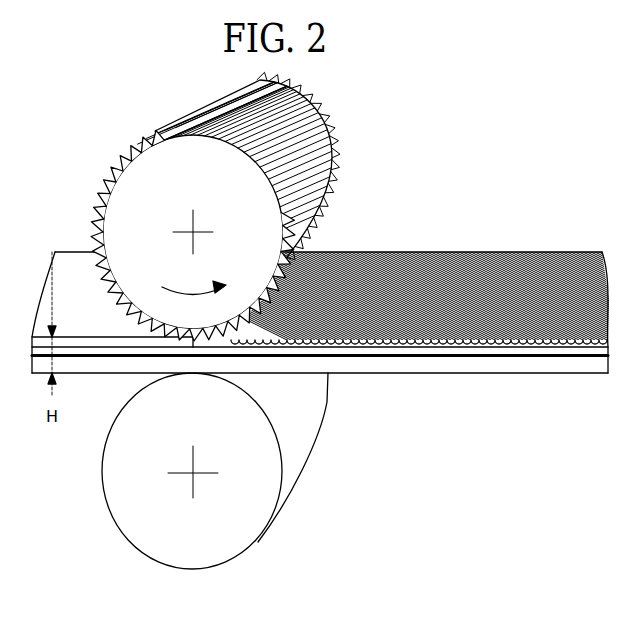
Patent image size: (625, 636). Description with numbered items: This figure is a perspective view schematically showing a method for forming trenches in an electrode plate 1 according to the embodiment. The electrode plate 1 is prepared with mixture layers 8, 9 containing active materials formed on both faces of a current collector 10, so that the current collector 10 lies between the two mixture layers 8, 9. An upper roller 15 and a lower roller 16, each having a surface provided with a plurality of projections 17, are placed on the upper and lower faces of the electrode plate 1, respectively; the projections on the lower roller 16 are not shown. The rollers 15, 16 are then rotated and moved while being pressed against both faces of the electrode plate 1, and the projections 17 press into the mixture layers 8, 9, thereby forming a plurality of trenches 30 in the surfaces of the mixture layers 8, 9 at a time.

The electrode plate 1 is at (320, 405).
The mixture layer 8 is at (507, 345).
The mixture layer 9 is at (437, 363).
The current collector 10 is at (472, 363).
The upper roller 15 is at (326, 206).
The lower roller 16 is at (200, 537).
The projections 17 is at (317, 102).
The trenches 30 is at (372, 268).